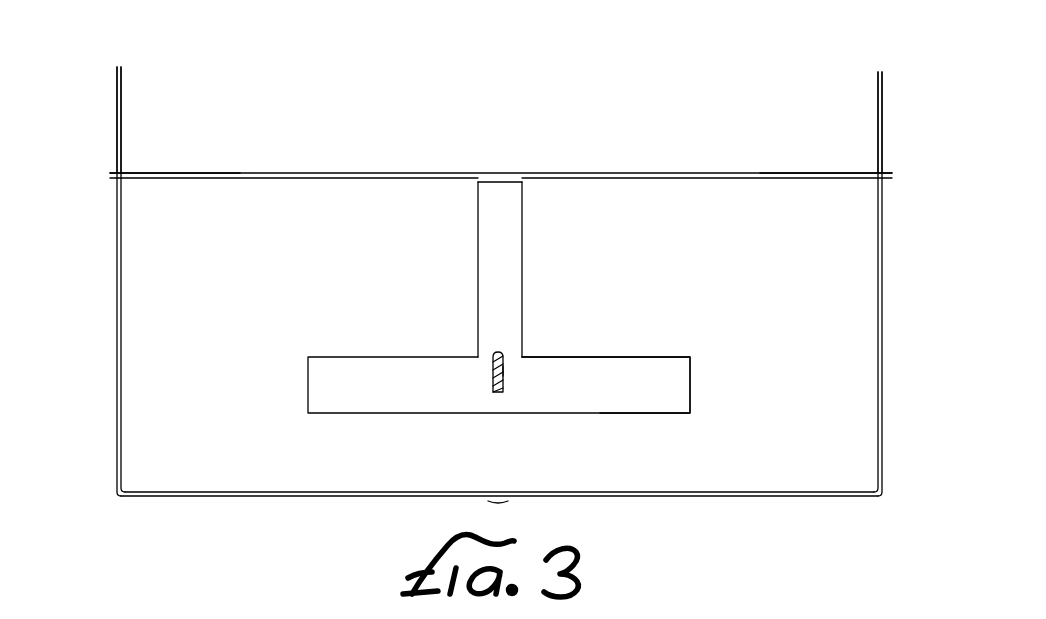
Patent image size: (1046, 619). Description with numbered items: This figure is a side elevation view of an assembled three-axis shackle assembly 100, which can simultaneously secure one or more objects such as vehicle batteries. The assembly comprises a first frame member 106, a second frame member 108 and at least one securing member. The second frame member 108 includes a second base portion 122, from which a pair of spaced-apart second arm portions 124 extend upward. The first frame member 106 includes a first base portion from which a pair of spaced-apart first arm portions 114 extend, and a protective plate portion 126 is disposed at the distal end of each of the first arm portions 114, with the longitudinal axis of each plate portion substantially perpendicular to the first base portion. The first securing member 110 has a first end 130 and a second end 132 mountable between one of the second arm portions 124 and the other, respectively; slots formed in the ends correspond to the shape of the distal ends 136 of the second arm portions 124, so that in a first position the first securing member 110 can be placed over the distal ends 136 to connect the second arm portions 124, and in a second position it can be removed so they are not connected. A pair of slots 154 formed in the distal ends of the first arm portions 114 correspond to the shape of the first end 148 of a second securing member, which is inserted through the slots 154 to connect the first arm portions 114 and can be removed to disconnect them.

The three-axis shackle assembly 100 is at (710, 101).
The first frame member 106 is at (446, 414).
The second frame member 108 is at (498, 311).
The first securing member 110 is at (501, 184).
The first arm portions 114 is at (492, 258).
The second base portion 122 is at (778, 500).
The second arm portions 124 is at (117, 348).
The protective plate portion 126 is at (653, 388).
The first end 130 is at (786, 180).
The second end 132 is at (205, 172).
The distal ends 136 is at (117, 112).
The first end 148 is at (503, 372).
The slots 154 is at (497, 393).